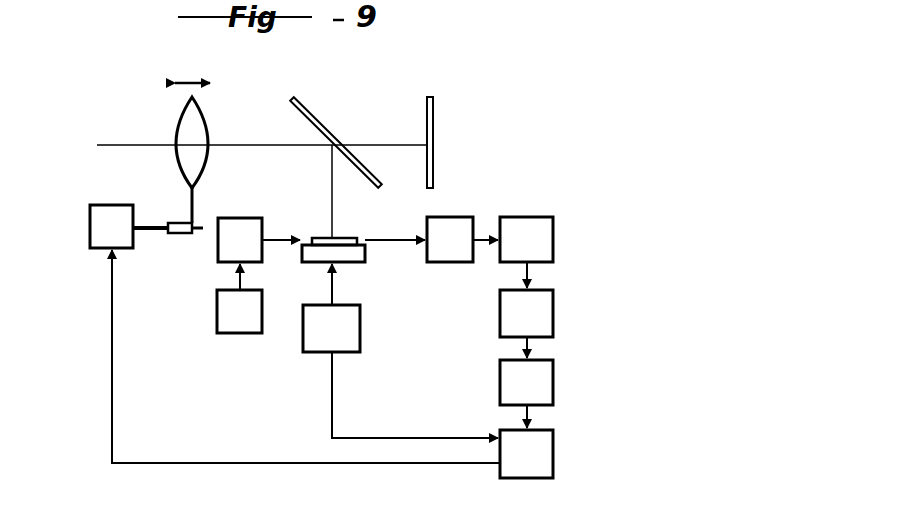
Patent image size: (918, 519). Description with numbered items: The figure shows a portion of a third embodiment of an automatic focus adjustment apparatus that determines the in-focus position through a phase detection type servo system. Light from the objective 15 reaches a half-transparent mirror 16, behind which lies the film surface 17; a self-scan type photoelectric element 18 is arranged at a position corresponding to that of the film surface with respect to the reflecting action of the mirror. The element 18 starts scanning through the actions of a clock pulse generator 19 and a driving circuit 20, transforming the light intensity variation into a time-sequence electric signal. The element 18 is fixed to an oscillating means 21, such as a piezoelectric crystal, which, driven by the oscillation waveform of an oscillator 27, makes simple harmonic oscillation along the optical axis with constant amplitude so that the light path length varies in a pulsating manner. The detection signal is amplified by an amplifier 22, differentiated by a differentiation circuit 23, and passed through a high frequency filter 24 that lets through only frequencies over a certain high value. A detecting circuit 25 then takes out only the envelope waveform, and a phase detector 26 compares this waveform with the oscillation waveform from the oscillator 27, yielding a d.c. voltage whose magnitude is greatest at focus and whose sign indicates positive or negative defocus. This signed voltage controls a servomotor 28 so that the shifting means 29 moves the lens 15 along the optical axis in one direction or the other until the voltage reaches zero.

The objective 15 is at (205, 109).
The half-transparent mirror 16 is at (314, 114).
The film surface 17 is at (434, 104).
The self-scan type photoelectric element 18 is at (350, 237).
The clock pulse generator 19 is at (218, 334).
The driving circuit 20 is at (263, 217).
The oscillating means 21 is at (358, 262).
The amplifier 22 is at (464, 263).
The differentiation circuit 23 is at (555, 215).
The high frequency filter 24 is at (556, 292).
The detecting circuit 25 is at (555, 362).
The phase detector 26 is at (553, 432).
The oscillator 27 is at (362, 352).
The servomotor 28 is at (88, 250).
The shifting means 29 is at (178, 236).